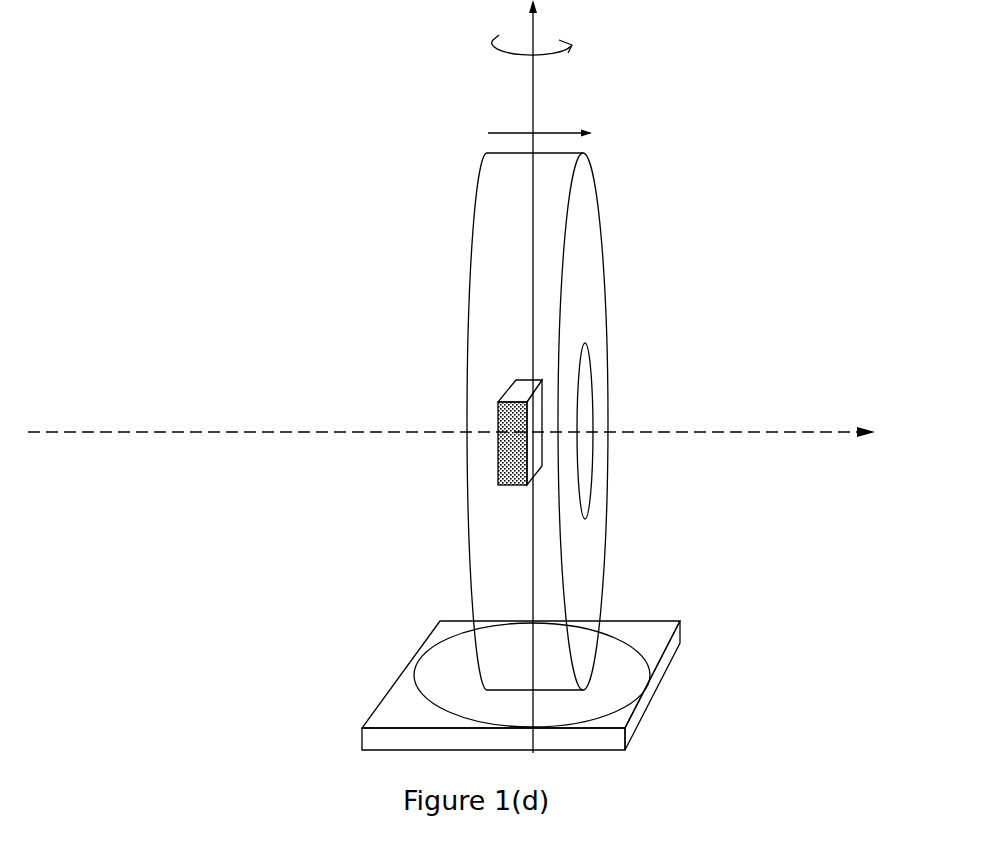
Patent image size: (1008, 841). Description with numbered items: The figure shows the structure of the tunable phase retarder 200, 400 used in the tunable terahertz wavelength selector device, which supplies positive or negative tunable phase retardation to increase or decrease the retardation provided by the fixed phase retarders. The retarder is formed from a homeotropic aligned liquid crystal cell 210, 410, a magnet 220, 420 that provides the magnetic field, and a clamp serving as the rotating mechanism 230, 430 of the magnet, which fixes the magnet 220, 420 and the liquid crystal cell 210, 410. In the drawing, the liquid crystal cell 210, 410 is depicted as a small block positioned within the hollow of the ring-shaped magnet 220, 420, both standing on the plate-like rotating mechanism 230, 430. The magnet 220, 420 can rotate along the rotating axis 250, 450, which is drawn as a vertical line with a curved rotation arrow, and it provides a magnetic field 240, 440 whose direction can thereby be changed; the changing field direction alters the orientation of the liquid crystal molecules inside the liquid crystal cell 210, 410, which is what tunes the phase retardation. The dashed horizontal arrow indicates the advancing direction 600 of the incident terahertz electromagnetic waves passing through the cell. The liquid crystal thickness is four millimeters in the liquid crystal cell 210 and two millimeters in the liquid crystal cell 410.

The tunable phase retarder 200 is at (468, 376).
The tunable phase retarder 400 is at (776, 97).
The liquid crystal cell 210 is at (403, 452).
The liquid crystal cell 410 is at (484, 461).
The magnet 220 is at (604, 421).
The magnet 420 is at (620, 271).
The rotating mechanism 230 is at (568, 685).
The rotating mechanism 430 is at (568, 685).
The magnetic field 240 is at (486, 130).
The magnetic field 440 is at (486, 130).
The rotating axis 250 is at (496, 376).
The rotating axis 450 is at (496, 376).
The advancing direction 600 is at (468, 454).